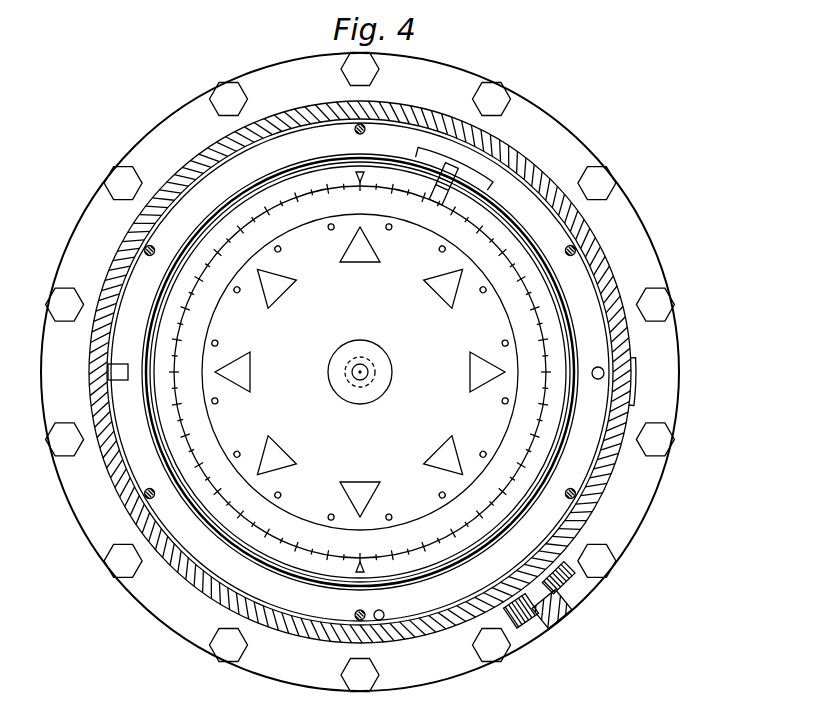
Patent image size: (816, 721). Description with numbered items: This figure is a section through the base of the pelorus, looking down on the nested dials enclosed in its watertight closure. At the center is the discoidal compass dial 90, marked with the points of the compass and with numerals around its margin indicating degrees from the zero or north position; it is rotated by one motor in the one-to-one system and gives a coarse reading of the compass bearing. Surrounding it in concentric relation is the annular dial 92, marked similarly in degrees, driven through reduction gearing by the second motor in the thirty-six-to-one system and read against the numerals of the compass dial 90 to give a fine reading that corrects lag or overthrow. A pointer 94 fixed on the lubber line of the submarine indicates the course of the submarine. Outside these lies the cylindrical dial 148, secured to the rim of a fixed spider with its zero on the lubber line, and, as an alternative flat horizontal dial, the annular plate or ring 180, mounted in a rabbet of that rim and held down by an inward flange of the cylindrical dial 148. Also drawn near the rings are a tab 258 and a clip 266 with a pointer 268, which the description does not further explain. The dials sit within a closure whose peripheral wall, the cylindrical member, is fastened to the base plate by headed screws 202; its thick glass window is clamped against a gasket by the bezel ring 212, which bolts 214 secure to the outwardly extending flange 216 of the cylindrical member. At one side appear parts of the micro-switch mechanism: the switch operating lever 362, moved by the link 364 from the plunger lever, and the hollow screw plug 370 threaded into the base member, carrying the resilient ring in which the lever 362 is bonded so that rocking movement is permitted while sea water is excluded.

The compass dial 90 is at (360, 372).
The annular dial 92 is at (360, 372).
The pointer 94 is at (379, 351).
The cylindrical dial 148 is at (360, 358).
The annular plate or ring (flat dial) 180 is at (360, 366).
The headed screws 202 is at (368, 380).
The bezel ring 212 is at (360, 386).
The bolts 214 is at (386, 70).
The outwardly extending flange 216 is at (360, 372).
The tab 258 is at (489, 161).
The clip 266 is at (439, 145).
The pointer 268 is at (419, 222).
The switch operating lever 362 is at (566, 627).
The link 364 is at (581, 612).
The hollow screw plug 370 is at (598, 587).